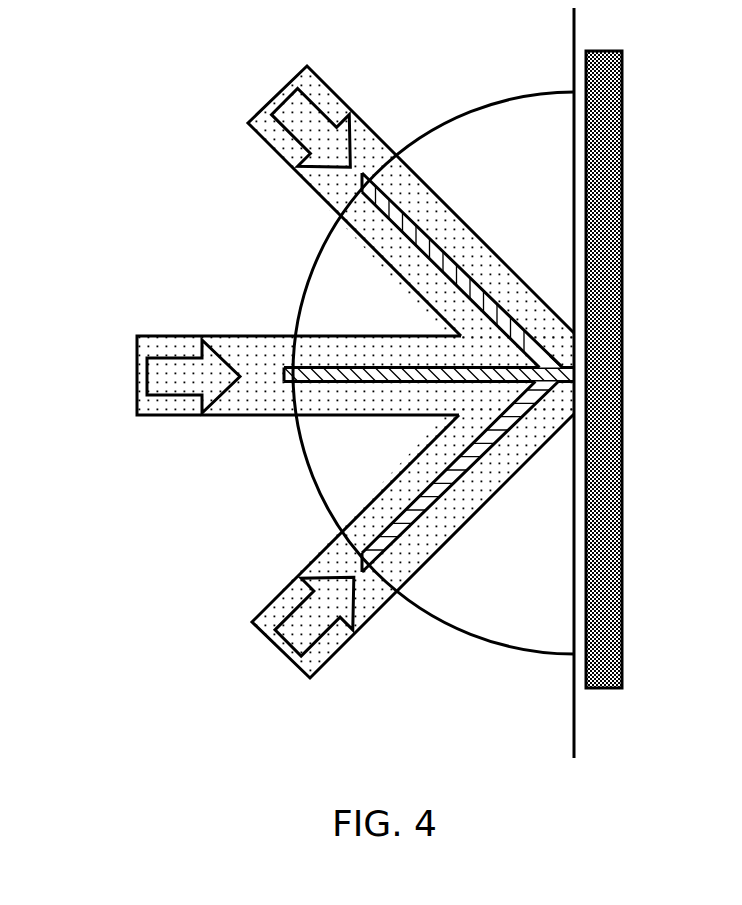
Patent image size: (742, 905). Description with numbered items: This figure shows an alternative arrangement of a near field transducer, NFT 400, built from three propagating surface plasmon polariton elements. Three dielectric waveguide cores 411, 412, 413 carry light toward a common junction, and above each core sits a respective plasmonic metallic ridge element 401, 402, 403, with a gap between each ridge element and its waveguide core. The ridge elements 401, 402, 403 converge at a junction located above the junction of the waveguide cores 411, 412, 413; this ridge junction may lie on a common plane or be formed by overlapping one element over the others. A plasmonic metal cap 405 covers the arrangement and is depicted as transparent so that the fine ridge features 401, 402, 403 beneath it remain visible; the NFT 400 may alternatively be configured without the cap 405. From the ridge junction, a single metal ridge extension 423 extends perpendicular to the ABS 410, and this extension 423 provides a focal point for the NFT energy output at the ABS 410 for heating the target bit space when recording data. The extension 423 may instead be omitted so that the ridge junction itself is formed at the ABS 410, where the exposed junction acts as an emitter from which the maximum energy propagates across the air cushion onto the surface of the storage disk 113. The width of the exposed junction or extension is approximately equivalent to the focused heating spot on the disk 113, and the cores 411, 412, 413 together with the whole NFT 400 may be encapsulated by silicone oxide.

The near field transducer 400 is at (92, 76).
The plasmonic metallic ridge element 401 is at (403, 234).
The plasmonic metallic ridge element 402 is at (397, 566).
The plasmonic metallic ridge element 403 is at (328, 383).
The plasmonic metal cap 405 is at (318, 512).
The ABS 410 is at (574, 27).
The dielectric waveguide core 411 is at (285, 86).
The dielectric waveguide core 412 is at (275, 645).
The dielectric waveguide core 413 is at (153, 336).
The metal ridge extension 423 is at (571, 362).
The storage disk 113 is at (622, 370).